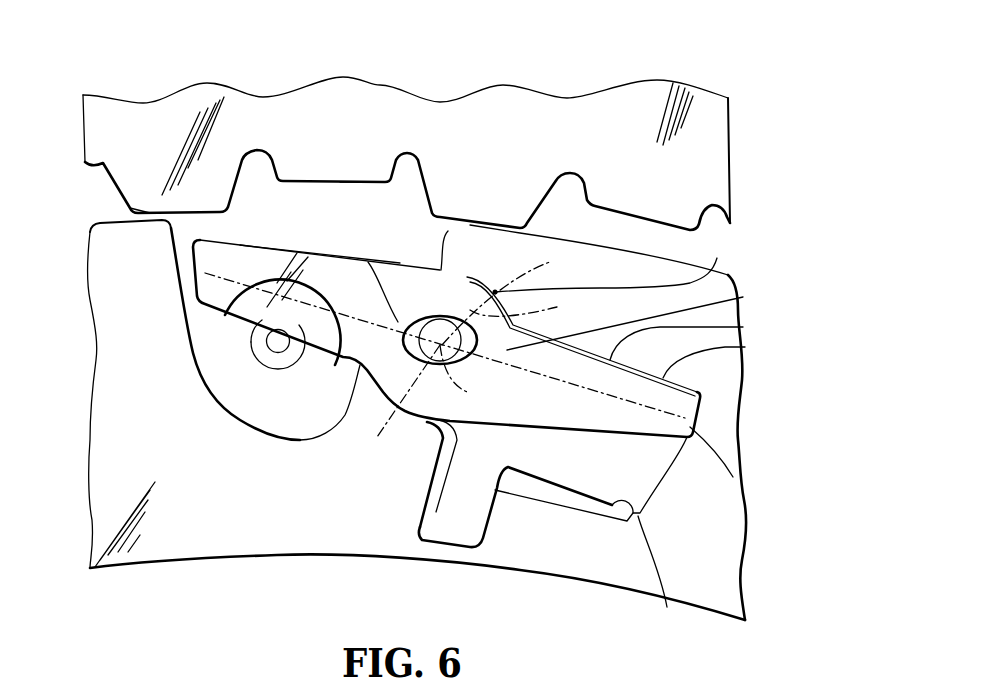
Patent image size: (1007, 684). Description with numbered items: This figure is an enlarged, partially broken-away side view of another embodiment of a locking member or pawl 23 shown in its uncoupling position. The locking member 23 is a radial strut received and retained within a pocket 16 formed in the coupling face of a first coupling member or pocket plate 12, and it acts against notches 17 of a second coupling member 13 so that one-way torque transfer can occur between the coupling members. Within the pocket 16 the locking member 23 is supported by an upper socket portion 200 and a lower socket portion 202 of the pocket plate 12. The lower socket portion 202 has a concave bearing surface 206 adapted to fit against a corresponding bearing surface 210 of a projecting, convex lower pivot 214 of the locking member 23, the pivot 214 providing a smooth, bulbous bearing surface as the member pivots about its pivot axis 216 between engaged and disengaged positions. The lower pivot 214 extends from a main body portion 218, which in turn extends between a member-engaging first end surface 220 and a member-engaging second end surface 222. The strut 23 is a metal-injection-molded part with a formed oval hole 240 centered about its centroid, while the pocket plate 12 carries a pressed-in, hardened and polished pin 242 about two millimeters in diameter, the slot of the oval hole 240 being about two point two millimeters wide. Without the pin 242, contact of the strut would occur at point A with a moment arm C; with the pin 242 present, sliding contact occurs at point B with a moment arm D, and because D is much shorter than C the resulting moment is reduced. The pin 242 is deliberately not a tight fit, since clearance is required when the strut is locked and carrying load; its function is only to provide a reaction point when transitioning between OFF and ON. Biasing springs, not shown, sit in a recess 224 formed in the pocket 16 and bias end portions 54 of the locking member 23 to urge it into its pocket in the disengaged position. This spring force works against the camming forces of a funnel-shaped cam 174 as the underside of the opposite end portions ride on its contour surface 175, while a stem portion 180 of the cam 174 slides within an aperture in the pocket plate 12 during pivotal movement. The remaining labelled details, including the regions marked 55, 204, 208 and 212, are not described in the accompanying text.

The first coupling member 12 is at (720, 367).
The second coupling member 13 is at (700, 145).
The pocket 16 is at (667, 607).
The notches 17 is at (218, 180).
The locking member 23 is at (370, 256).
The end portions 54 is at (743, 327).
The tooth of upper plate 55 is at (225, 260).
The cam 174 is at (283, 400).
The contour surface 175 is at (260, 380).
The stem portion 180 is at (260, 357).
The upper socket portion 200 is at (462, 233).
The lower socket portion 202 is at (420, 427).
The lever surface 204 is at (743, 297).
The concave bearing surface 206 is at (421, 533).
The lever edge 208 is at (621, 262).
The bearing surface 210 is at (365, 437).
The lever flange 212 is at (470, 272).
The lower pivot 214 is at (327, 427).
The pivot axis 216 is at (425, 318).
The main body portion 218 is at (745, 347).
The first end surface 220 is at (193, 252).
The second end surface 222 is at (733, 477).
The recess 224 is at (497, 480).
The oval hole 240 is at (365, 252).
The pin 242 is at (478, 338).
The contact point A is at (507, 298).
The contact point B is at (400, 408).
The moment arm C is at (525, 309).
The moment arm D is at (468, 376).